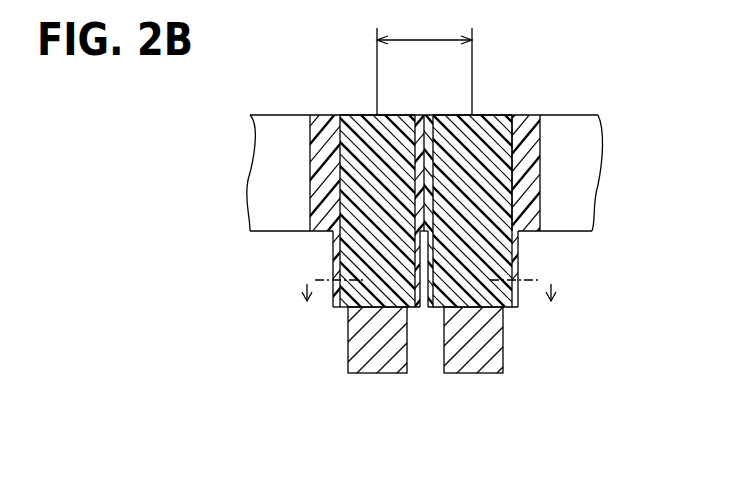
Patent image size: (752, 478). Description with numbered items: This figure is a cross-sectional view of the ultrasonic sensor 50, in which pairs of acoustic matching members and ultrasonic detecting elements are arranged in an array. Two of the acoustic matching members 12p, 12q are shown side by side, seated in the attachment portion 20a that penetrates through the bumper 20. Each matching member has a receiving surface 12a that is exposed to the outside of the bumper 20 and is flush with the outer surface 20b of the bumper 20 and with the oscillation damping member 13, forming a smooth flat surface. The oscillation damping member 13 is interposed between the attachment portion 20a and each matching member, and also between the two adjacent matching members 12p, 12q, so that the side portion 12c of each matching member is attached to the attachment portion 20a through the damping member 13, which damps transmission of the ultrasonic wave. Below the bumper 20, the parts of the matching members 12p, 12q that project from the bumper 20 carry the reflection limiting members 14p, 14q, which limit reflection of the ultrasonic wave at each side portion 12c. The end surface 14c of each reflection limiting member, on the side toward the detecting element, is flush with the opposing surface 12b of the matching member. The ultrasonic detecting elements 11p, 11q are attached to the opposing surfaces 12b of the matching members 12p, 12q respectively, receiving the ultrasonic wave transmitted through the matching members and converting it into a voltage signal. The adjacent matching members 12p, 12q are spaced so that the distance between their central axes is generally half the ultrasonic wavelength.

The ultrasonic sensor 50 is at (590, 100).
The bumper 20 is at (293, 125).
The attachment portion 20a is at (330, 130).
The outer surface 20b is at (268, 115).
The oscillation damping member 13 is at (330, 132).
The receiving surface 12a is at (452, 116).
The opposing surface 12b is at (338, 310).
The side portion 12c is at (506, 127).
The acoustic matching member 12p is at (350, 248).
The acoustic matching member 12q is at (497, 247).
The reflection limiting member 14p is at (335, 270).
The reflection limiting member 14q is at (512, 256).
The end surface 14c is at (343, 308).
The ultrasonic detecting element 11p is at (383, 352).
The ultrasonic detecting element 11q is at (477, 352).